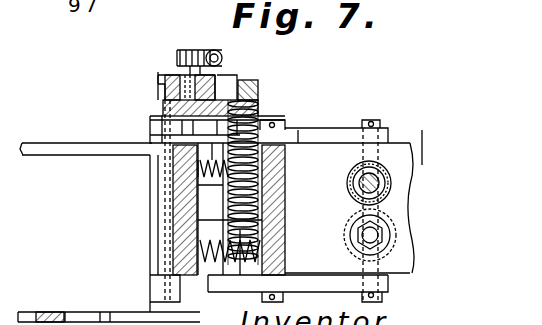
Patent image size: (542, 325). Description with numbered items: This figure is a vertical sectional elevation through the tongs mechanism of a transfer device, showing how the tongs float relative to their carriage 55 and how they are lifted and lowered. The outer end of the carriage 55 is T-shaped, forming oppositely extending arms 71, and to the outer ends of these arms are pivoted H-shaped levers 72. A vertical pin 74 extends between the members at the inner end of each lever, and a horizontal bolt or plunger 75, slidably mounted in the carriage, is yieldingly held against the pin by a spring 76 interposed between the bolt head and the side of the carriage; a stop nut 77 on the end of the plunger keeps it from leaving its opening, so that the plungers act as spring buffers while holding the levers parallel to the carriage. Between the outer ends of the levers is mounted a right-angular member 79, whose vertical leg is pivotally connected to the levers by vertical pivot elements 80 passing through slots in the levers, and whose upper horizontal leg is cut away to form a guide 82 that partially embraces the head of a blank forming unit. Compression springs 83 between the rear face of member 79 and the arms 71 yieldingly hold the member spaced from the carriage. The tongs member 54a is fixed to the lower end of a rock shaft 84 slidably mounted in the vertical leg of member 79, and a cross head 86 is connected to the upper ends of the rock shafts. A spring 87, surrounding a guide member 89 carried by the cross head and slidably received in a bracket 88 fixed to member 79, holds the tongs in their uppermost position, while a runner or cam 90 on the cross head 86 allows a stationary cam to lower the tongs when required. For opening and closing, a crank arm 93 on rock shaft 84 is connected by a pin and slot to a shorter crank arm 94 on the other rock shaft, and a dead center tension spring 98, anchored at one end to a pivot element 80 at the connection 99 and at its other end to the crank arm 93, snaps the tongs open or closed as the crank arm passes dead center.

The tongs member 54a is at (58, 313).
The carriage 55 is at (397, 268).
The arms 71 is at (287, 228).
The levers 72 is at (337, 133).
The vertical pin 74 is at (373, 120).
The bolt or plunger 75 is at (380, 178).
The spring 76 is at (352, 171).
The stop nut 77 is at (355, 240).
The right angular member 79 is at (165, 214).
The vertical pivot element 80 is at (167, 72).
The guide 82 is at (40, 153).
The compression spring 83 is at (197, 165).
The rock shaft 84 is at (180, 133).
The cross head 86 is at (162, 107).
The spring 87 is at (260, 120).
The bracket 88 is at (287, 197).
The guide member 89 is at (292, 143).
The runner or cam 90 is at (250, 80).
The crank arm 93 is at (157, 79).
The crank arm 94 is at (221, 92).
The dead center tension spring 98 is at (181, 50).
The spring connection 99 is at (177, 62).